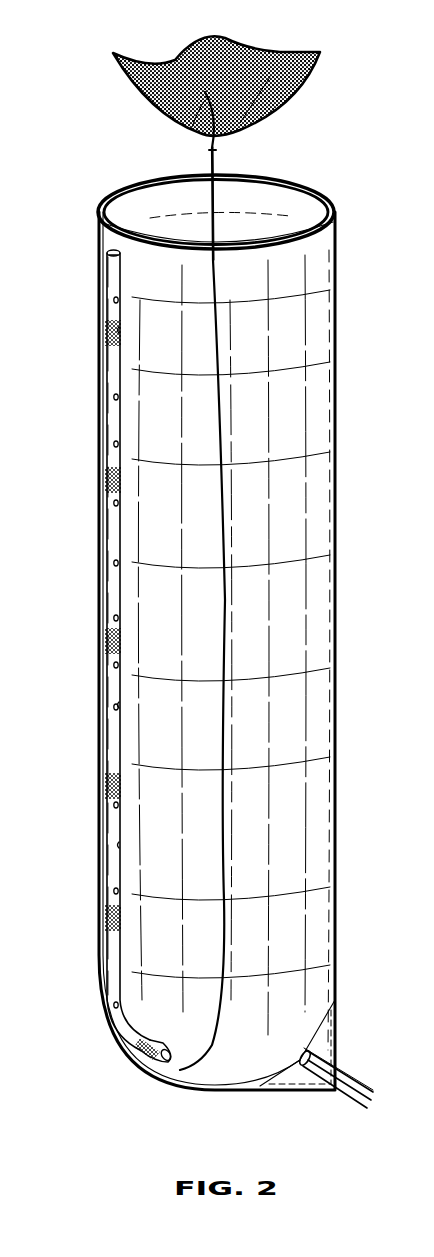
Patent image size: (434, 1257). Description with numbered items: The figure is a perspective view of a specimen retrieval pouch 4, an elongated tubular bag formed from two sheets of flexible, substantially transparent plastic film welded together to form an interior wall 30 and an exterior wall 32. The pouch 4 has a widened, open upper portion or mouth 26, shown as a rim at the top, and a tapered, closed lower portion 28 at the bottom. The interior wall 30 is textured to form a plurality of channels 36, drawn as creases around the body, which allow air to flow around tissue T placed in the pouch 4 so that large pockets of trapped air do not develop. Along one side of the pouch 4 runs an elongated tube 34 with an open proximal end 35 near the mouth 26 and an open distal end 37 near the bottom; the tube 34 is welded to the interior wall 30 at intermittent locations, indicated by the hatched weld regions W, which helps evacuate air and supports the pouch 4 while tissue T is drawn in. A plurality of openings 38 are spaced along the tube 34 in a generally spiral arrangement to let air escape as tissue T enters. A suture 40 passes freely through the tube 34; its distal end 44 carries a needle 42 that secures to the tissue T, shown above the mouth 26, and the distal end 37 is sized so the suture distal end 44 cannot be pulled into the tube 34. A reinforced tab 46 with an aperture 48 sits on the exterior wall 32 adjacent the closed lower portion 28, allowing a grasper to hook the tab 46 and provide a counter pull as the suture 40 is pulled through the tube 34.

The pouch 4 is at (92, 248).
The mouth 26 is at (336, 215).
The closed lower portion 28 is at (178, 1082).
The interior wall 30 is at (314, 210).
The exterior wall 32 is at (327, 292).
The elongated tube 34 is at (112, 592).
The open proximal end 35 is at (118, 262).
The channels 36 is at (307, 585).
The open distal end 37 is at (150, 1045).
The openings 38 is at (108, 303).
The suture 40 is at (110, 250).
The needle 42 is at (218, 135).
The distal end of the suture 44 is at (216, 150).
The reinforced tab 46 is at (283, 1092).
The aperture 48 is at (322, 1050).
The tissue T is at (312, 87).
The weld hatching W is at (104, 341).